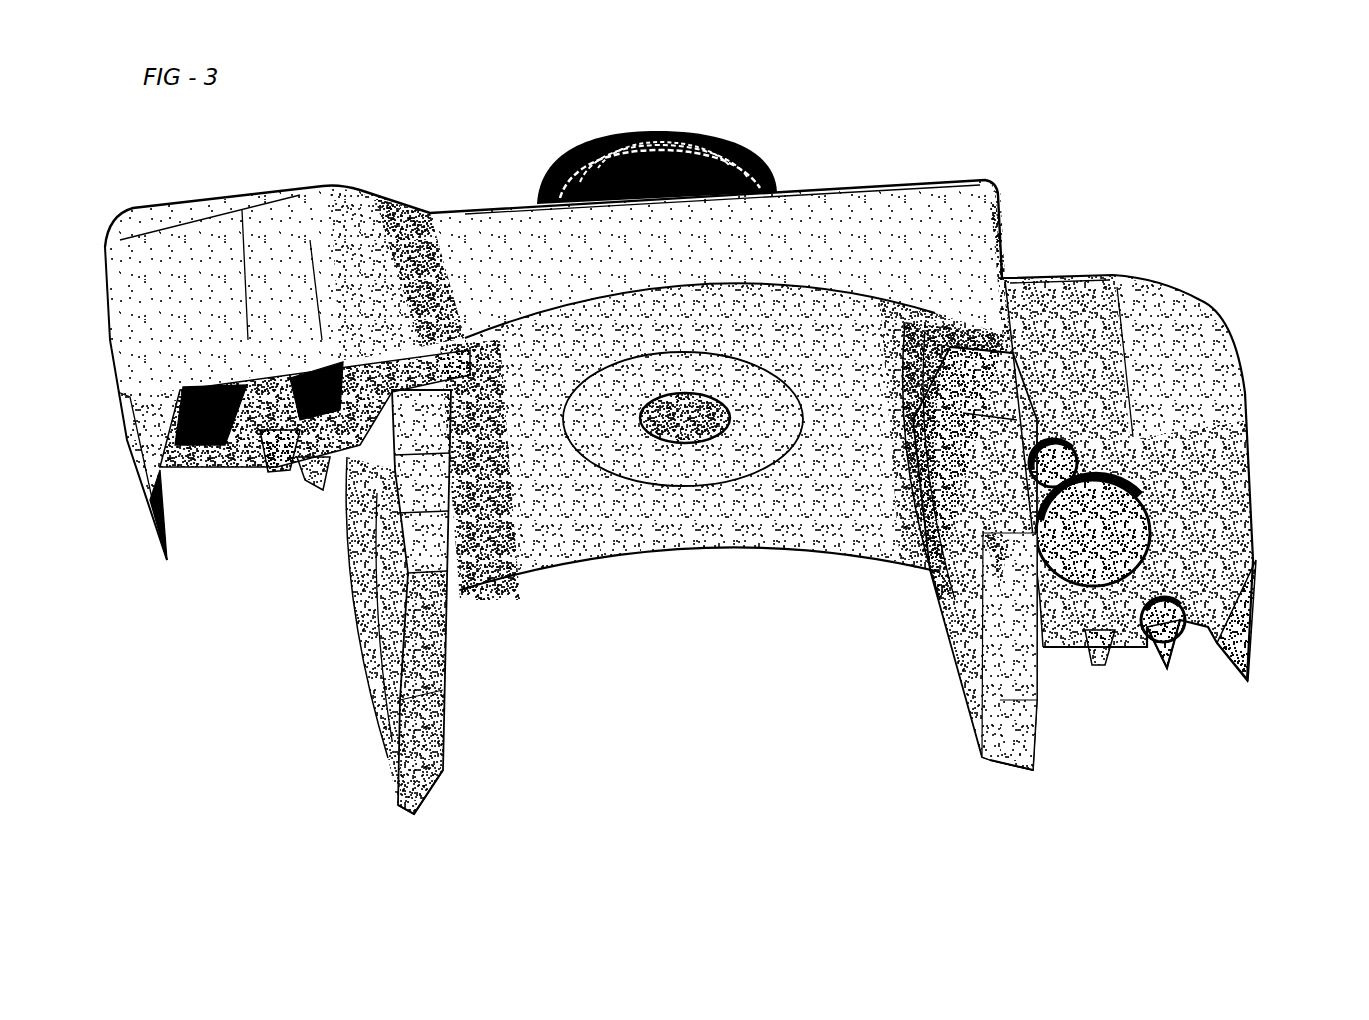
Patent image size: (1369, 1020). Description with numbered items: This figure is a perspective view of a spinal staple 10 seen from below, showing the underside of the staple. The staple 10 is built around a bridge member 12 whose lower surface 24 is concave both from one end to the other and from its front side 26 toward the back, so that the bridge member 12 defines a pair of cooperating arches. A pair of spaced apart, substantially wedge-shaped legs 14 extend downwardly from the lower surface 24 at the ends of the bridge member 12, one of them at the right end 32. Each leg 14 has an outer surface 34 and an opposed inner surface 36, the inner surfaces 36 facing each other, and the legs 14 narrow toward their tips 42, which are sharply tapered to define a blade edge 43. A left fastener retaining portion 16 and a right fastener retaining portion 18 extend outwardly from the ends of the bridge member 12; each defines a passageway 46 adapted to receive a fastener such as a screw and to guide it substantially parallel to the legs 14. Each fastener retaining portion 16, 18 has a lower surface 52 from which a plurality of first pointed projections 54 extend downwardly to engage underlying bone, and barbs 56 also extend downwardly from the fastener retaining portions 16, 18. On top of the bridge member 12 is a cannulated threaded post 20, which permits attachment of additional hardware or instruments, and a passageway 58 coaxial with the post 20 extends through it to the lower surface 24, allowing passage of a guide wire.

The spinal staple 10 is at (726, 438).
The bridge member 12 is at (912, 205).
The legs 14 is at (373, 665).
The left fastener retaining portion 16 is at (185, 235).
The right fastener retaining portion 18 is at (1163, 305).
The threaded post 20 is at (675, 145).
The lower surface 24 is at (818, 520).
The front side 26 is at (818, 210).
The right end 32 is at (1000, 216).
The outer surface 34 is at (375, 613).
The inner surface 36 is at (925, 590).
The tips 42 is at (388, 768).
The blade edge 43 is at (418, 735).
The passageway 46 is at (270, 465).
The lower surface 52 is at (212, 465).
The first pointed projections 54 is at (310, 490).
The barbs 56 is at (157, 548).
The passageway 58 is at (690, 430).